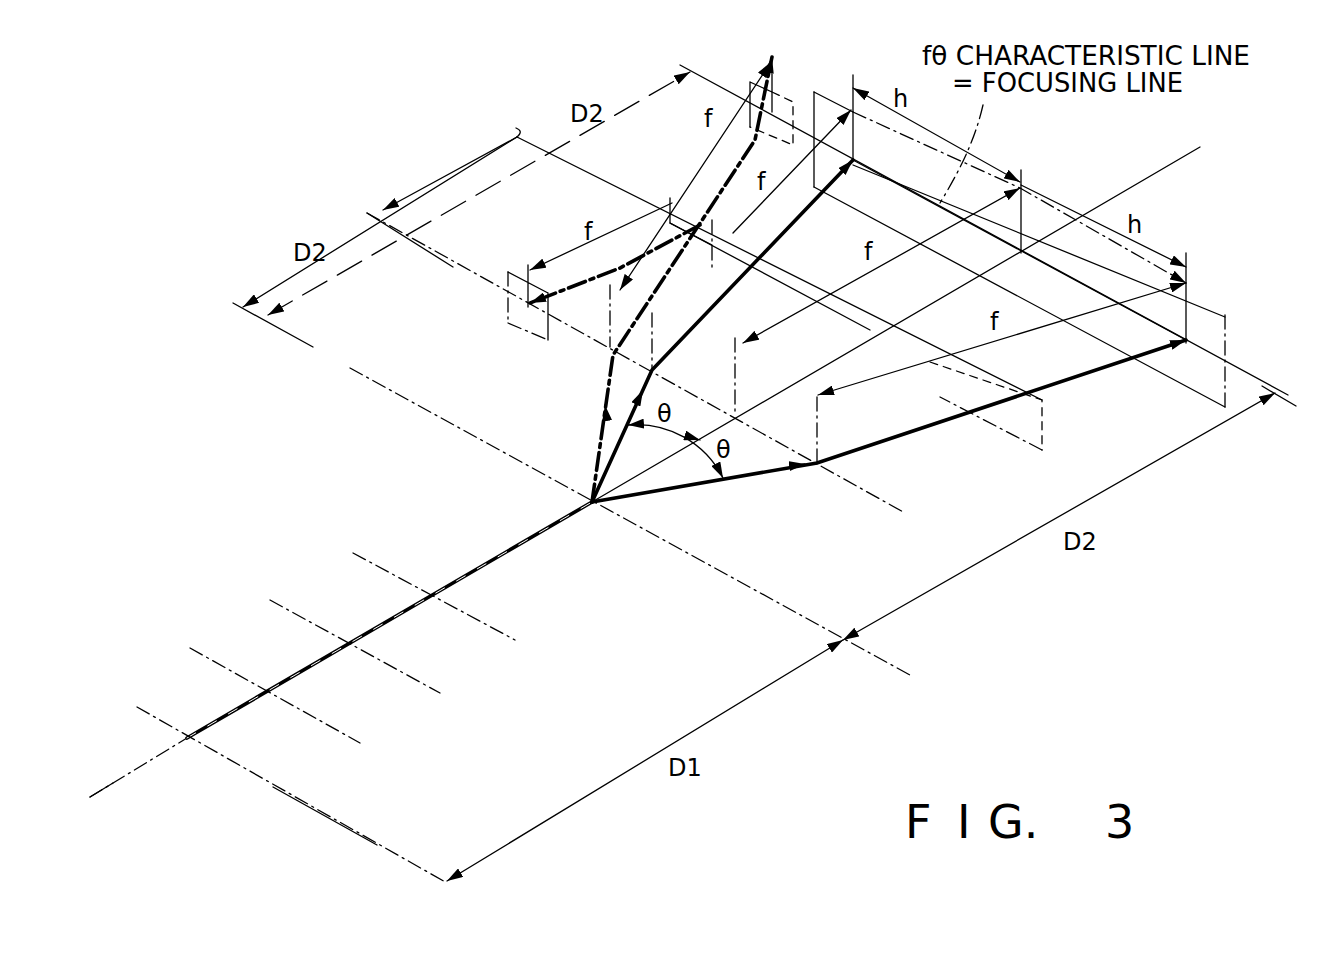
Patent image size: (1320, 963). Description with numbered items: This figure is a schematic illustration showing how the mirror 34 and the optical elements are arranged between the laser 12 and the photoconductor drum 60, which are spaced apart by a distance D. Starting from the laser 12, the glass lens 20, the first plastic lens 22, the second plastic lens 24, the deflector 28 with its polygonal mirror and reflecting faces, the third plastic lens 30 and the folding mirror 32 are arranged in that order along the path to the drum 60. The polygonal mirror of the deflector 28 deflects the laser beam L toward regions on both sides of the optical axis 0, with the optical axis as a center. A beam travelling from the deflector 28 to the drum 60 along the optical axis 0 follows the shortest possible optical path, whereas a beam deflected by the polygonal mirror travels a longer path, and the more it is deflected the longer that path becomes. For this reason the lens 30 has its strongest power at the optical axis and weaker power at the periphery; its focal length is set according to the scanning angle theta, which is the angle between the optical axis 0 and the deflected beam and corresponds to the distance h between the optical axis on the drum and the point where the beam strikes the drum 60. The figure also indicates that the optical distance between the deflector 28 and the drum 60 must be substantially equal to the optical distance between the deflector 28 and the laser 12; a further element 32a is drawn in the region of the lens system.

The optical axis 0 is at (1193, 150).
The laser 12 is at (273, 790).
The glass lens 20 is at (346, 743).
The first plastic lens 22 is at (426, 693).
The second plastic lens 24 is at (505, 640).
The deflector 28 is at (718, 570).
The third plastic lens 30 is at (903, 513).
The folding mirror 32 is at (1007, 385).
The lens element 32a is at (672, 205).
The mirror 34 is at (790, 100).
The photoconductor drum 60 is at (1207, 303).